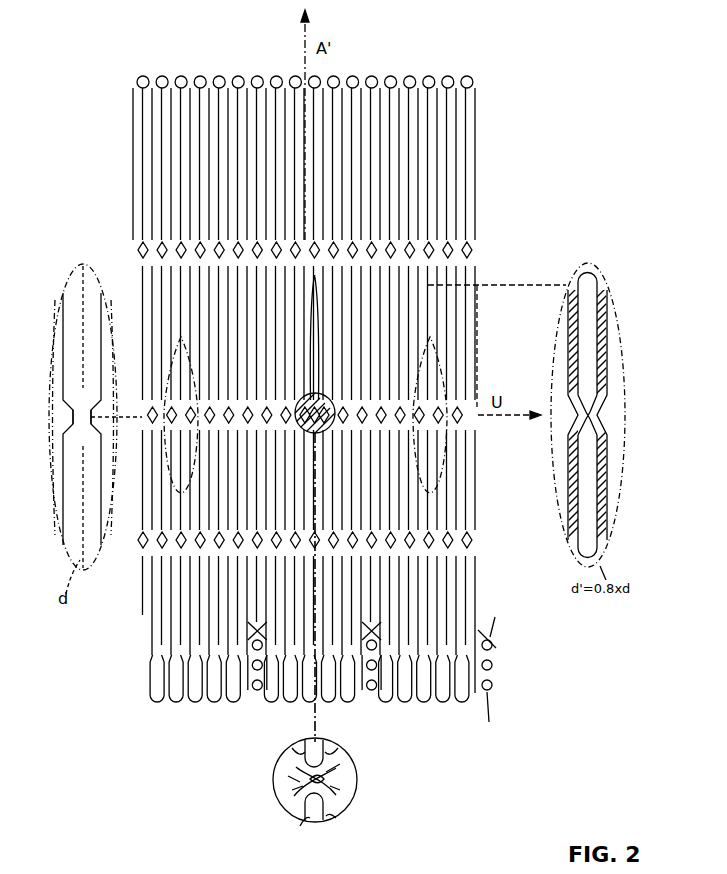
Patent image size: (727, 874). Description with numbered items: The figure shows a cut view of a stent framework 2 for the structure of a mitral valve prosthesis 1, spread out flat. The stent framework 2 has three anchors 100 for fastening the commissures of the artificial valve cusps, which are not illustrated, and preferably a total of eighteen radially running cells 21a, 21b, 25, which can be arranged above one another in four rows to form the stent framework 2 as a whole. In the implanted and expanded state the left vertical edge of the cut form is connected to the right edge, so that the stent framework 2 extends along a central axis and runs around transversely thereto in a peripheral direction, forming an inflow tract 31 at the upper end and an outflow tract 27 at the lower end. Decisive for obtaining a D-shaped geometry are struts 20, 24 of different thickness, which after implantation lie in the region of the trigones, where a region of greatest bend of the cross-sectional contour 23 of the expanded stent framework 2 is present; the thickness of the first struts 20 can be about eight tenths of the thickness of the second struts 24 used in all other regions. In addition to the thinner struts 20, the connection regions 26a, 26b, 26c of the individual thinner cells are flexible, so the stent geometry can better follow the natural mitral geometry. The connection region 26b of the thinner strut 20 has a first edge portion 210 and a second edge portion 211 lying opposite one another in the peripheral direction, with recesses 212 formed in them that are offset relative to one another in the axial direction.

The mitral valve prosthesis 1 is at (531, 86).
The stent framework 2 is at (170, 638).
The first stent struts 20 is at (568, 338).
The stent cells 21a is at (580, 303).
The stent cells 21b is at (322, 742).
The cross-sectional contour 23 is at (213, 403).
The second stent struts 24 is at (56, 338).
The stent cells 25 is at (63, 303).
The connection region 26a is at (600, 417).
The connection region 26b is at (290, 812).
The connection region 26c is at (73, 417).
The outflow tract 27 is at (156, 692).
The inflow tract 31 is at (137, 83).
The anchors 100 is at (487, 692).
The first edge portion 210 is at (292, 790).
The second edge portion 211 is at (338, 776).
The recesses 212 is at (288, 776).